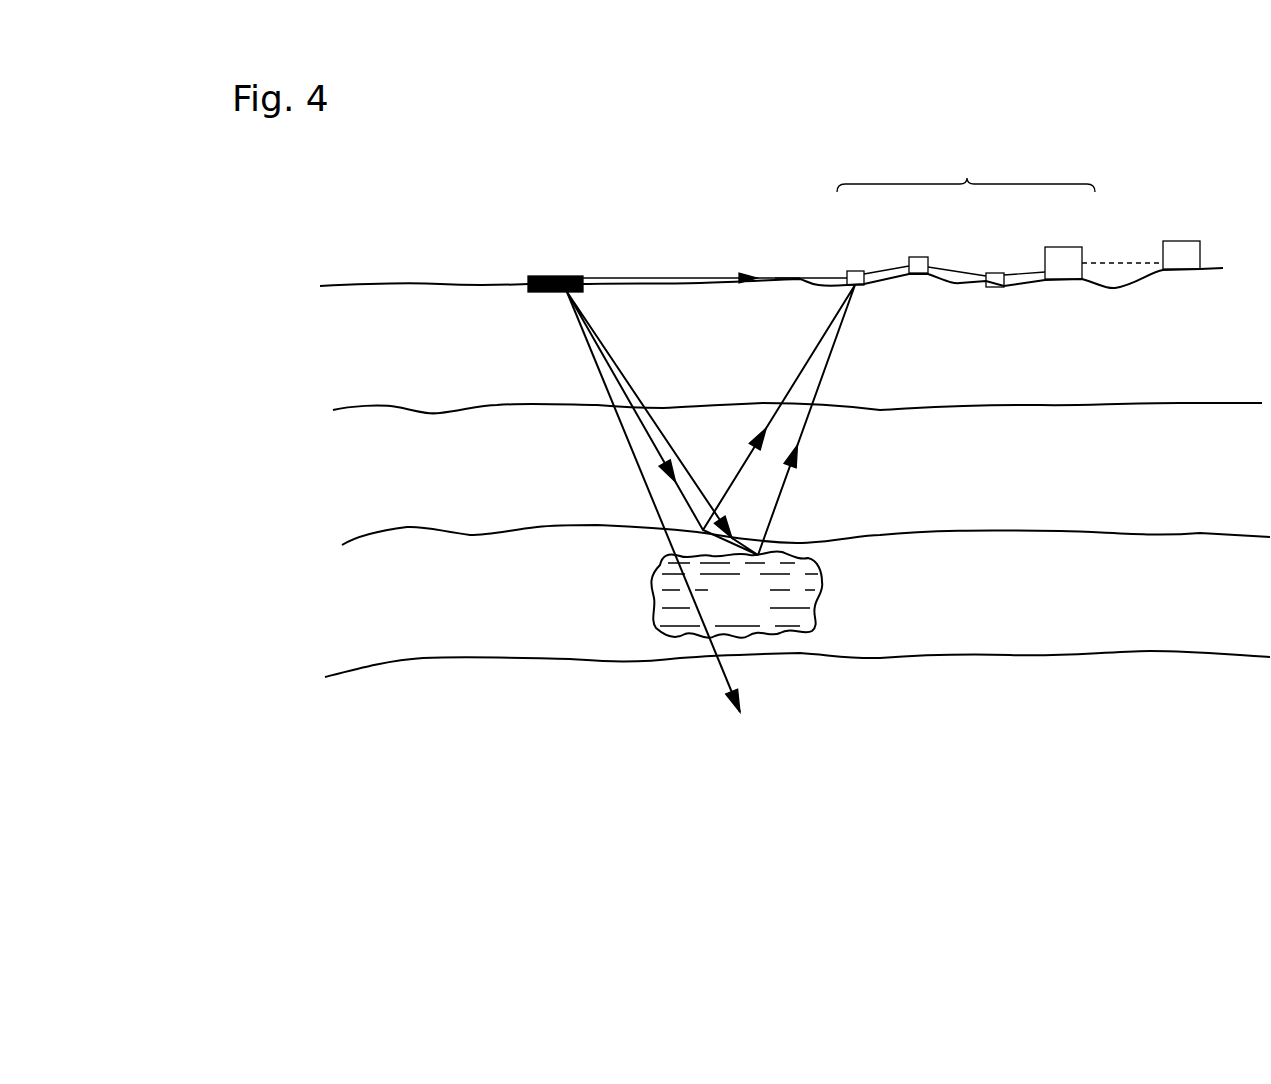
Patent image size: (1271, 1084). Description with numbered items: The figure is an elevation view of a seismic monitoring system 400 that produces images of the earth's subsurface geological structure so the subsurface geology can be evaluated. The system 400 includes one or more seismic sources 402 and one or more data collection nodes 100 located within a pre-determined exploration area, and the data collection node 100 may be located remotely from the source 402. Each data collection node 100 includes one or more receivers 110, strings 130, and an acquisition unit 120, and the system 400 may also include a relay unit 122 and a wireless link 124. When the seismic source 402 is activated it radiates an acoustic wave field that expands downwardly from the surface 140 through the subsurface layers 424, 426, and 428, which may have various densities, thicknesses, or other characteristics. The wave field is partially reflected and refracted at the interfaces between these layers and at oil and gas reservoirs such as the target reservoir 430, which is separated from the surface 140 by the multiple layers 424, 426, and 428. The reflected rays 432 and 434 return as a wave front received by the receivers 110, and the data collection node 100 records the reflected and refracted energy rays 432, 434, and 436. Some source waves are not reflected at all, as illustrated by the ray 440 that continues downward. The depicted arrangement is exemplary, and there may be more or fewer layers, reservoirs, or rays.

The seismic monitoring system 400 is at (556, 174).
The seismic source 402 is at (548, 276).
The data collection node 100 is at (966, 174).
The receiver 110 is at (855, 271).
The acquisition unit 120 is at (1068, 247).
The relay unit 122 is at (1184, 241).
The wireless link 124 is at (1125, 263).
The string 130 is at (958, 270).
The surface 140 is at (727, 278).
The subsurface layer 424 is at (402, 382).
The subsurface layer 426 is at (377, 500).
The subsurface layer 428 is at (370, 640).
The target reservoir 430 is at (752, 608).
The ray 432 is at (658, 452).
The ray 434 is at (779, 498).
The energy ray 436 is at (775, 278).
The ray 440 is at (708, 670).